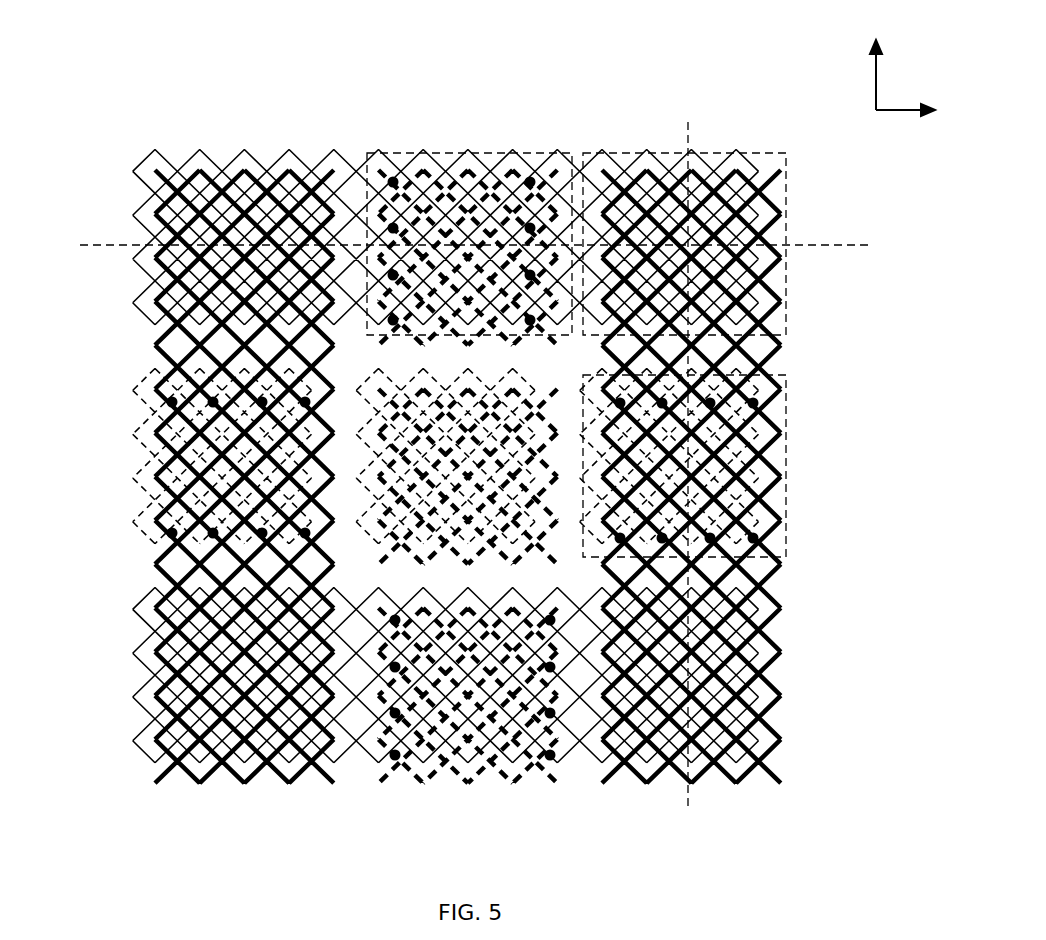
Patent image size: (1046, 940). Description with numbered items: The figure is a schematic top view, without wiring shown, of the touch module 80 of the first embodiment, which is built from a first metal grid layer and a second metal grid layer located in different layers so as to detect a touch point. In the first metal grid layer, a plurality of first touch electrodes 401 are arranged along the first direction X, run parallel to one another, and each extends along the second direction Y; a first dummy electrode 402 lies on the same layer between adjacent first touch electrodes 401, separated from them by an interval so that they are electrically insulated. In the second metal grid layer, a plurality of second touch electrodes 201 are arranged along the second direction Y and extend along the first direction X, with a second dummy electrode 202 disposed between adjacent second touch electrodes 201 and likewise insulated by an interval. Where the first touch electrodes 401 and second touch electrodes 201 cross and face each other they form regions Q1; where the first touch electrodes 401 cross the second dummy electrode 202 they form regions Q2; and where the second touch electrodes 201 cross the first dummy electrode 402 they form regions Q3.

The touch module 80 is at (185, 92).
The second touch electrode 201 is at (305, 152).
The second dummy electrode 202 is at (140, 398).
The first touch electrode 401 is at (790, 356).
The first dummy electrode 402 is at (520, 790).
The region where first touch electrode and second touch electrode cross Q1 is at (786, 193).
The region where first touch electrode and second dummy electrode cross Q2 is at (780, 455).
The region where second touch electrode and first dummy electrode cross Q3 is at (452, 160).